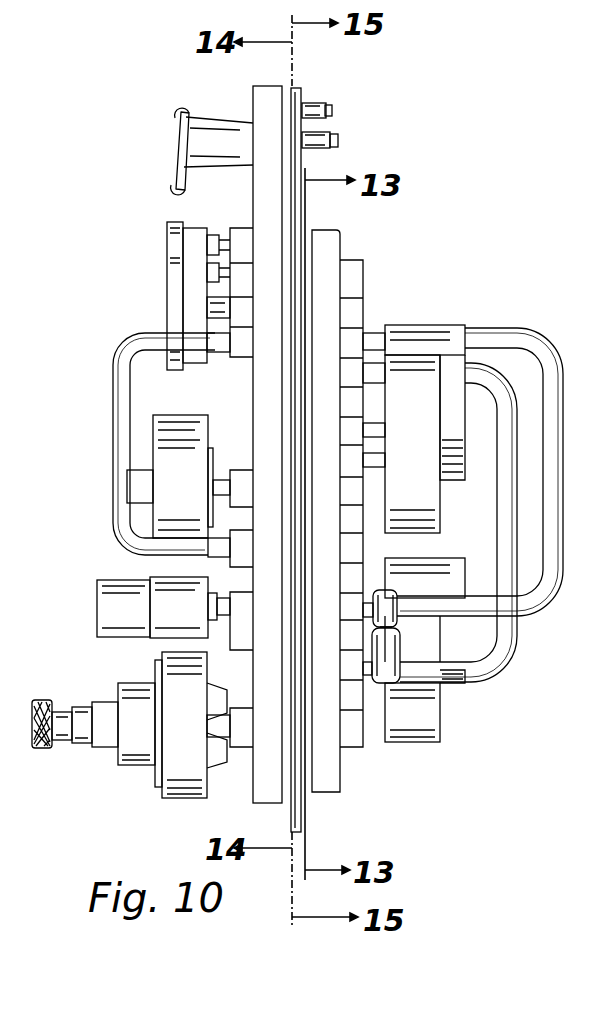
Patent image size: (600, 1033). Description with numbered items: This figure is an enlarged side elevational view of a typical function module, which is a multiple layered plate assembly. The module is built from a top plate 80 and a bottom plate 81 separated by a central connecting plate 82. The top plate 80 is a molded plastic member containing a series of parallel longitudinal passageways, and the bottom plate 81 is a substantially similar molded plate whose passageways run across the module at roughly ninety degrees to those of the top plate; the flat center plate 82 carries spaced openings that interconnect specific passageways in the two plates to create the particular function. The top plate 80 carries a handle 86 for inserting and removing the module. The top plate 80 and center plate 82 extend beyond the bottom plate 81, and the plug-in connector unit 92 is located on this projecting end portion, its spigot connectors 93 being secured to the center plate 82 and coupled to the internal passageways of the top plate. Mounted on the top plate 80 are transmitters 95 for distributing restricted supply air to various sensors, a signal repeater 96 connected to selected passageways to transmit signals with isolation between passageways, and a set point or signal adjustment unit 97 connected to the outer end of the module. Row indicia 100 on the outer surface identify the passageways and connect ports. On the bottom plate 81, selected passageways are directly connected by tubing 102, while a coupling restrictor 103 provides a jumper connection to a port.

The top plate 80 is at (263, 193).
The bottom plate 81 is at (327, 250).
The central connecting plate 82 is at (297, 218).
The handle 86 is at (172, 142).
The plug-in connector unit 92 is at (318, 103).
The spigot connectors 93 is at (340, 138).
The transmitters 95 is at (172, 265).
The signal repeater 96 is at (182, 415).
The set point or signal adjustment unit 97 is at (183, 800).
The row indicia 100 is at (164, 444).
The tubing 102 is at (457, 327).
The coupling restrictor 103 is at (397, 623).